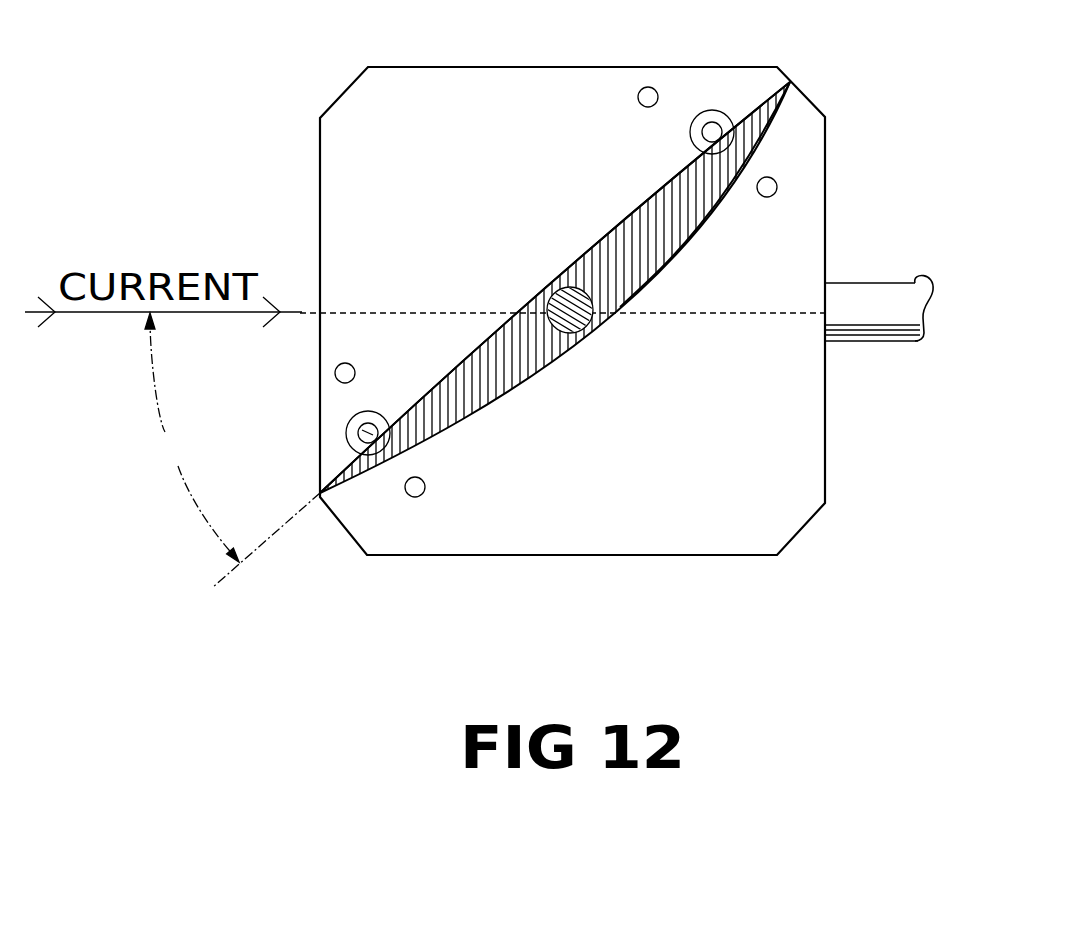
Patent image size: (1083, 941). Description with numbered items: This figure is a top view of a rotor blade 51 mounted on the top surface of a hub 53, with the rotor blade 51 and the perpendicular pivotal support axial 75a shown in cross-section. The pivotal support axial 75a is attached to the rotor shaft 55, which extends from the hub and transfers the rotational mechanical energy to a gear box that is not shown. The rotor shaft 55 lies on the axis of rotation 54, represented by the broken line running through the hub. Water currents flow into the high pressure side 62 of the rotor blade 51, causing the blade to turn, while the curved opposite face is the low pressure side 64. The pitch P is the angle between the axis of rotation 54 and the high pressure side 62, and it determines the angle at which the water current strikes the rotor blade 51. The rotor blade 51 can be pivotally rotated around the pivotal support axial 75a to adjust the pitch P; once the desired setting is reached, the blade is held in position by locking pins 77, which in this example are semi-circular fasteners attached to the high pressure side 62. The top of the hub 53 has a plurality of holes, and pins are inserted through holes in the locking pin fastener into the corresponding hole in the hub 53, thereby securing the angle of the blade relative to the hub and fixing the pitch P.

The rotor blade 51 is at (495, 393).
The hub 53 is at (393, 108).
The axis of rotation 54 is at (375, 305).
The rotor shaft 55 is at (882, 316).
The high pressure side 62 is at (646, 197).
The low pressure side 64 is at (776, 141).
The pivotal support axial 75a is at (553, 290).
The locking pins 77 is at (359, 432).
The pitch P is at (232, 450).